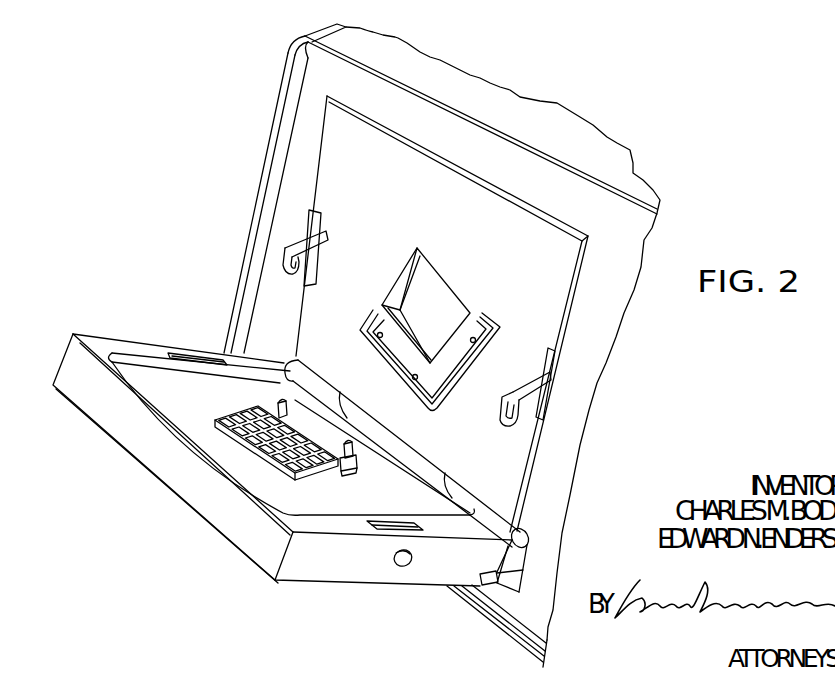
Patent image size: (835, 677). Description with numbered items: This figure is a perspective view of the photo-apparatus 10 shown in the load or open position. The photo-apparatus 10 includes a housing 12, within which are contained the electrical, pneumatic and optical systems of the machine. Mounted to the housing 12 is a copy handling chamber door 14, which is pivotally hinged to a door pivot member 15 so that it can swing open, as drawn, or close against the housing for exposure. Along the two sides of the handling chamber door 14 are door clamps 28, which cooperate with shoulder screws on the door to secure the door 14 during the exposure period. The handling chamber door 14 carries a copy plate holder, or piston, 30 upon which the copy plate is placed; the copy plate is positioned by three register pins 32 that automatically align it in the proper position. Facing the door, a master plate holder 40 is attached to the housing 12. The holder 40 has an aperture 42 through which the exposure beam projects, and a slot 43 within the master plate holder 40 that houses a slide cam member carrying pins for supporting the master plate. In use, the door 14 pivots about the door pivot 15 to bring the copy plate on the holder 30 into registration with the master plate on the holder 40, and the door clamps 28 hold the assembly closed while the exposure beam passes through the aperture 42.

The photo-apparatus 10 is at (266, 122).
The housing 12 is at (583, 465).
The copy handling chamber door 14 is at (60, 363).
The door pivot member 15 is at (423, 457).
The door clamps 28 is at (318, 251).
The copy plate holder or piston 30 is at (244, 447).
The register pins 32 is at (296, 362).
The master plate holder 40 is at (578, 278).
The aperture 42 is at (440, 288).
The slot 43 is at (490, 322).